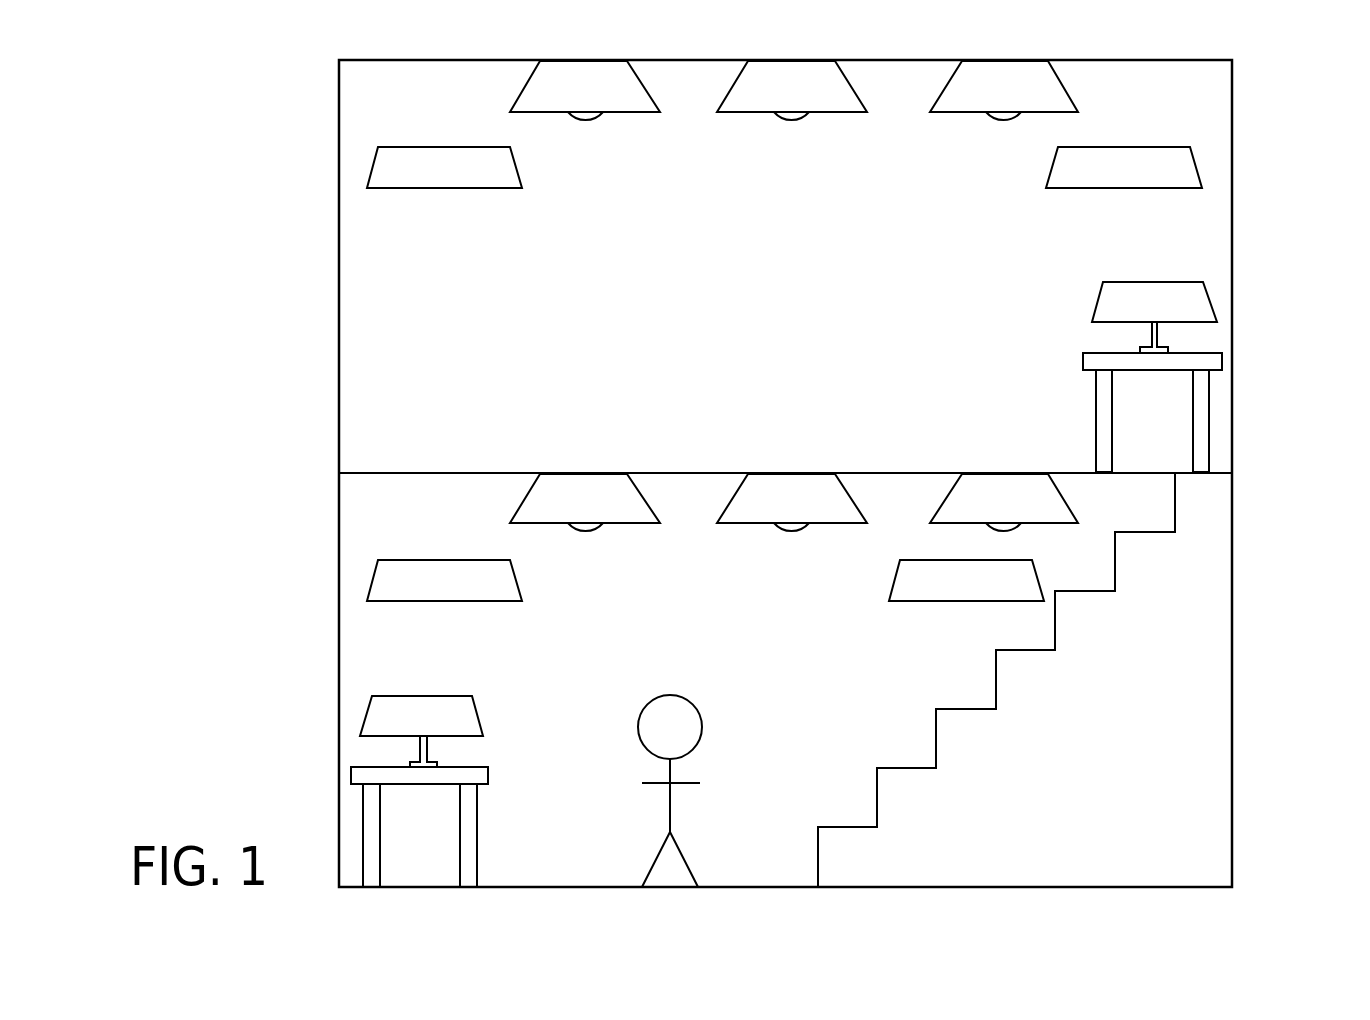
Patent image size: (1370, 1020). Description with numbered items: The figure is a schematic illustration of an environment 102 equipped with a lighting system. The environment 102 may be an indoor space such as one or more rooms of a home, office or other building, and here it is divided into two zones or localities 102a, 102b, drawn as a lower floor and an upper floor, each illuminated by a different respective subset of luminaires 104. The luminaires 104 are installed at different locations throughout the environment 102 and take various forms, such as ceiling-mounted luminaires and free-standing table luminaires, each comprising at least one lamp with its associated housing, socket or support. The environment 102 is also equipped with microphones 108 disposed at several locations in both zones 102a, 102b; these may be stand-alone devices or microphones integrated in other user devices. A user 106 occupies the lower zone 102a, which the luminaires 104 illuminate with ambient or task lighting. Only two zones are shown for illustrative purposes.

The environment 102 is at (1283, 70).
The zone 102a is at (393, 646).
The zone 102b is at (337, 92).
The luminaire 104 is at (633, 114).
The user 106 is at (702, 727).
The microphone 108 is at (372, 165).